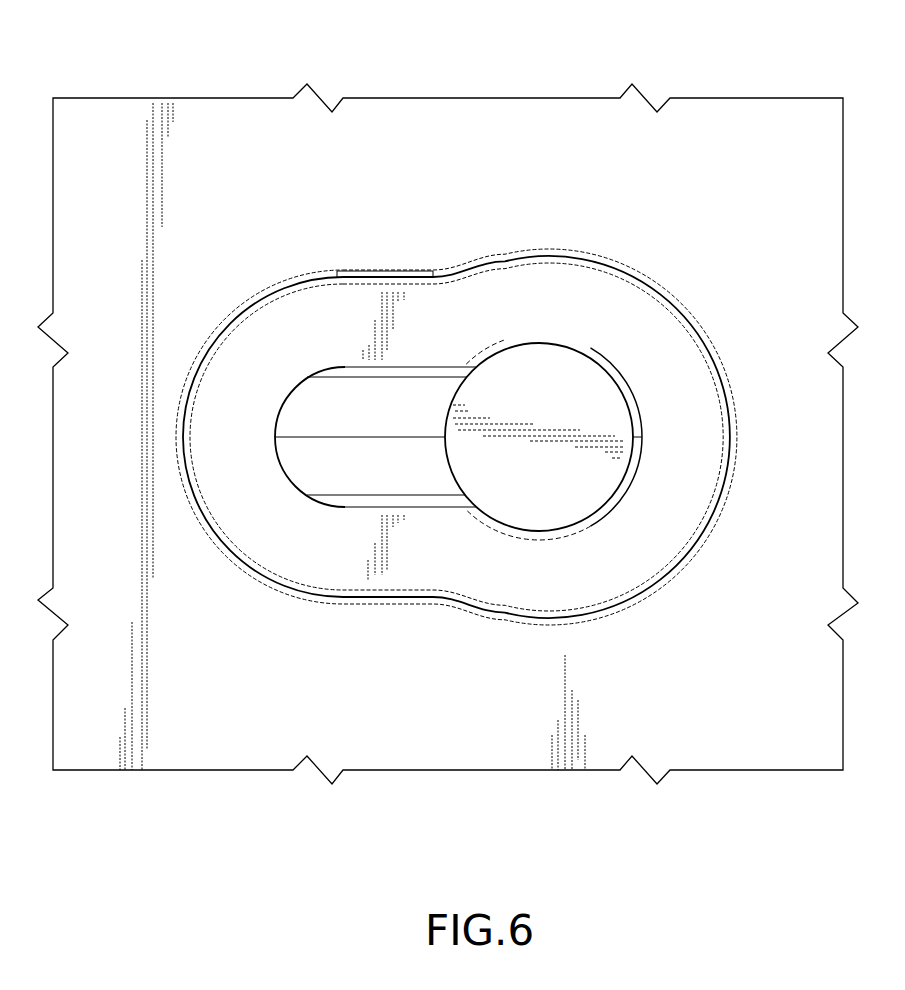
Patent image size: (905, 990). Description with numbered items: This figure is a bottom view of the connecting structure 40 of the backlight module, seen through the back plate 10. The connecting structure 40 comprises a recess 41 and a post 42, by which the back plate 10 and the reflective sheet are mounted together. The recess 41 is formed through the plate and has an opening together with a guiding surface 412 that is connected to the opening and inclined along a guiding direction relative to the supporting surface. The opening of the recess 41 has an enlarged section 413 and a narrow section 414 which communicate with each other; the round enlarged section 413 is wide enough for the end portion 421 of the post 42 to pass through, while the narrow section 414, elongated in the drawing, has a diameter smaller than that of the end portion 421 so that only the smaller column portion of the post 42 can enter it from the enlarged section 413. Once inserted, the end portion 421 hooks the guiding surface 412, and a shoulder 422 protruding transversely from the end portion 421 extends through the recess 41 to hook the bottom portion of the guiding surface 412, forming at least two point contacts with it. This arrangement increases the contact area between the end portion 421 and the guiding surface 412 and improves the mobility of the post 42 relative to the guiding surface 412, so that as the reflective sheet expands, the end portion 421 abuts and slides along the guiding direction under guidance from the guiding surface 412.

The back plate 10 is at (741, 105).
The connecting structure 40 is at (293, 272).
The recess 41 is at (358, 295).
The guiding surface 412 is at (523, 295).
The post 42 is at (585, 358).
The enlarged section 413 is at (633, 473).
The narrow section 414 is at (373, 507).
The shoulder 422 is at (455, 475).
The end portion 421 is at (575, 475).